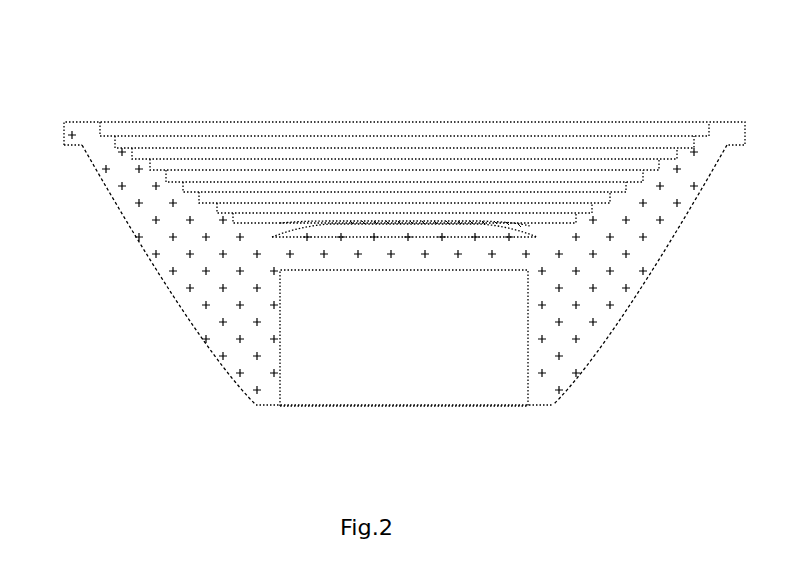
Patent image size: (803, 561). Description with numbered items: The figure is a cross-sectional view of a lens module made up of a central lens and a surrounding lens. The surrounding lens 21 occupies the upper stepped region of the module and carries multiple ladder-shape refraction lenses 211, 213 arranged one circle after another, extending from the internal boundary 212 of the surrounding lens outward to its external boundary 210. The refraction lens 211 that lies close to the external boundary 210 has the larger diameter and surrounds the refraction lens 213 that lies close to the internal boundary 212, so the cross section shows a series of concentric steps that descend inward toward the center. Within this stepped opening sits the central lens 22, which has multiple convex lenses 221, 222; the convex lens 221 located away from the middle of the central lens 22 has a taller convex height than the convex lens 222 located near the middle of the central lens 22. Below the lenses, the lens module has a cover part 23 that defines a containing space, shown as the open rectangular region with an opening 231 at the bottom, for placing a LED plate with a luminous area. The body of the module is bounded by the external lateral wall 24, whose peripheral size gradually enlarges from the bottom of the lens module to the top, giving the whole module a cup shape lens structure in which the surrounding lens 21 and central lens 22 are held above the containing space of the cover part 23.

The surrounding lens 21 is at (167, 180).
The external boundary 210 is at (101, 135).
The refraction lens 211 is at (145, 160).
The internal boundary 212 is at (272, 237).
The refraction lens 213 is at (195, 195).
The central lens 22 is at (492, 253).
The convex lens 221 is at (297, 227).
The convex lens 222 is at (366, 225).
The cover part 23 is at (278, 341).
The opening of through hole 231 is at (420, 370).
The external lateral wall 24 is at (628, 312).